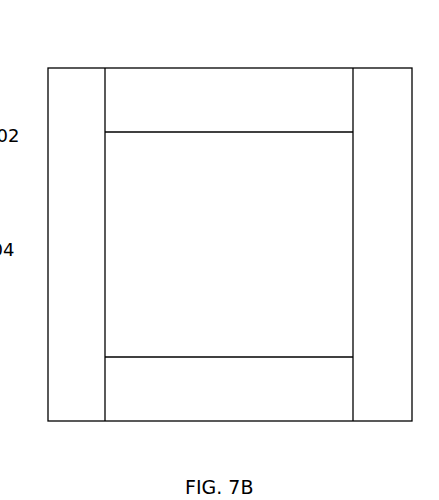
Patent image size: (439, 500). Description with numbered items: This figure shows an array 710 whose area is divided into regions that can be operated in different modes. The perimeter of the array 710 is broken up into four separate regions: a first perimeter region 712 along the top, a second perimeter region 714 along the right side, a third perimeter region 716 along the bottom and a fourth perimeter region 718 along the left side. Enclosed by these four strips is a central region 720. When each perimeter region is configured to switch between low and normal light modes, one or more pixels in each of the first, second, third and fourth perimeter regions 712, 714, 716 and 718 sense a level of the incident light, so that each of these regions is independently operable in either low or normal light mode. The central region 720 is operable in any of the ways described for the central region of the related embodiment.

The array 710 is at (306, 55).
The first perimeter region 712 is at (182, 103).
The second perimeter region 714 is at (375, 105).
The third perimeter region 716 is at (305, 401).
The fourth perimeter region 718 is at (65, 371).
The central region 720 is at (152, 296).